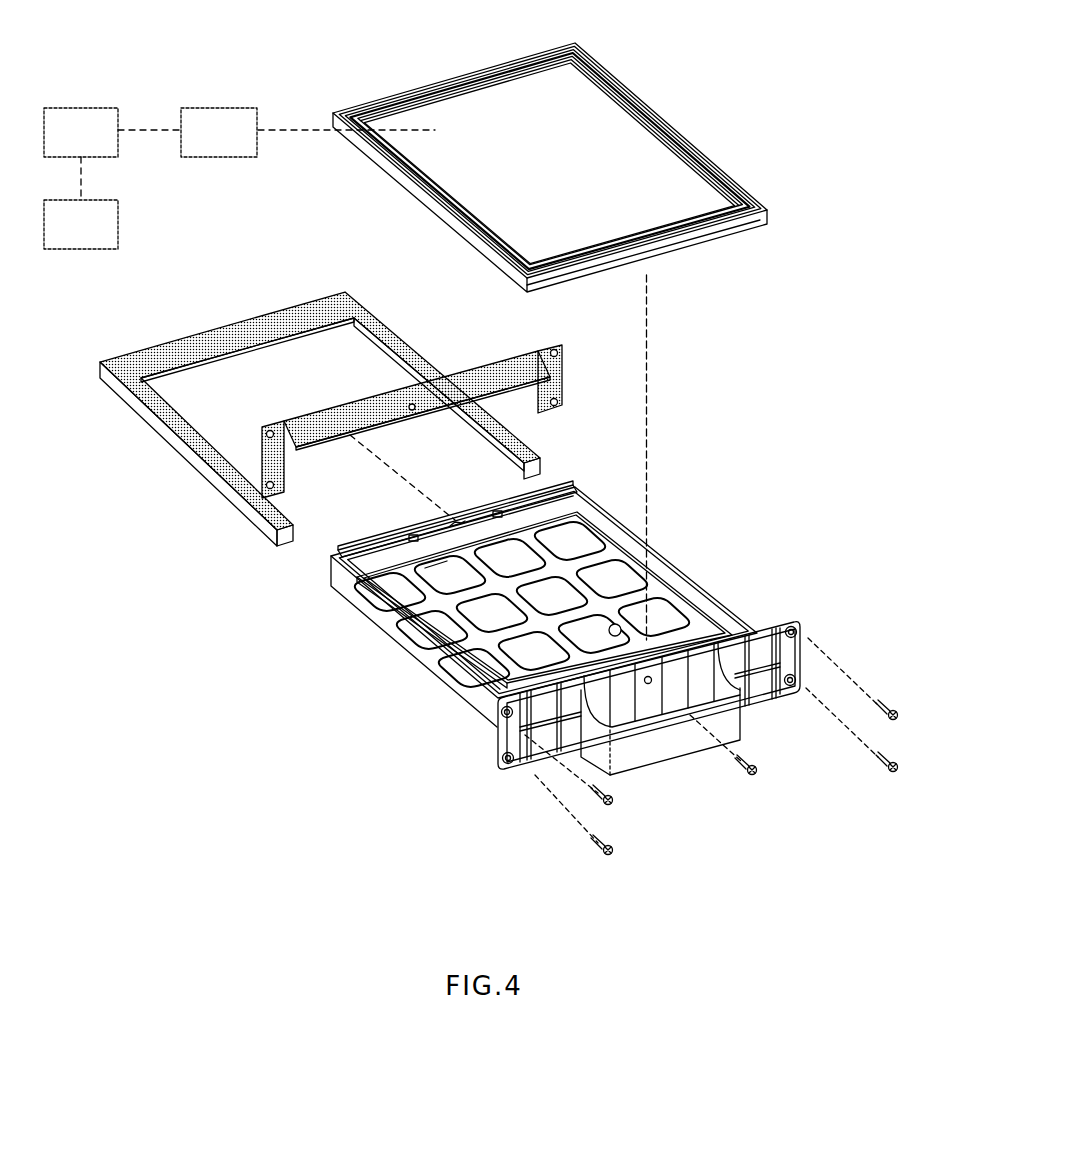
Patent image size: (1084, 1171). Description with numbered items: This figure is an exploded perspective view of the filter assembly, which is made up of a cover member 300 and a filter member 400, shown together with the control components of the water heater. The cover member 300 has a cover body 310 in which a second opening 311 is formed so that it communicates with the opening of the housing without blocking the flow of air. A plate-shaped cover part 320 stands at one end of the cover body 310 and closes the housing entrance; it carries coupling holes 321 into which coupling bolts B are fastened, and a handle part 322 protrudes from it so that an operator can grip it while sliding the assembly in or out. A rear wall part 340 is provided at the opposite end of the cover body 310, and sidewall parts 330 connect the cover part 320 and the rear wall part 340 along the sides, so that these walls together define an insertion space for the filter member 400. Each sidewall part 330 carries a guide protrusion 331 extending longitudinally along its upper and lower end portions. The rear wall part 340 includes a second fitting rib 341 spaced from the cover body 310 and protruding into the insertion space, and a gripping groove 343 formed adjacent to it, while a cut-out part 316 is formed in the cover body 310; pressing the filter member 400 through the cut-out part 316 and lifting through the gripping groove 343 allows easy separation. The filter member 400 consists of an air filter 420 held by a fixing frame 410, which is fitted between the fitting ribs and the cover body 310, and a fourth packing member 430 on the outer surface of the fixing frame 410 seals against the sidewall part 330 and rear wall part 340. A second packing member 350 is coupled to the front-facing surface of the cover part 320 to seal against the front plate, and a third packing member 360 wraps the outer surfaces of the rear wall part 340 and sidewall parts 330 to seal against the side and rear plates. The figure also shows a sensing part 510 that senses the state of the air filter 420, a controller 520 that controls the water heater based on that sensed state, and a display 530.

The filter member 400 is at (563, 148).
The fixing frame 410 is at (677, 133).
The air filter 420 is at (590, 130).
The fourth packing member 430 is at (736, 228).
The sensing part 510 is at (220, 108).
The controller 520 is at (81, 108).
The display 530 is at (118, 224).
The cover member 300 is at (626, 648).
The cover body 310 is at (523, 600).
The second opening 311 is at (617, 627).
The cut-out part 316 is at (503, 533).
The cover part 320 is at (647, 684).
The coupling hole 321 is at (500, 718).
The handle part 322 is at (653, 750).
The sidewall part 330 is at (544, 586).
The guide protrusion 331 is at (597, 500).
The rear wall part 340 is at (462, 495).
The second fitting rib 341 is at (497, 514).
The gripping groove 343 is at (451, 520).
The second packing member 350 is at (562, 375).
The third packing member 360 is at (397, 329).
The coupling bolt B is at (905, 725).